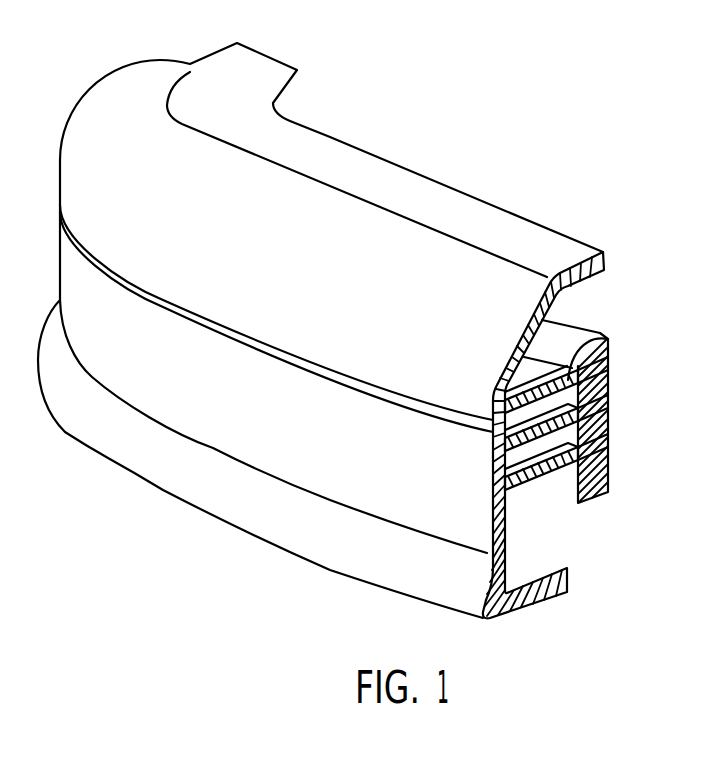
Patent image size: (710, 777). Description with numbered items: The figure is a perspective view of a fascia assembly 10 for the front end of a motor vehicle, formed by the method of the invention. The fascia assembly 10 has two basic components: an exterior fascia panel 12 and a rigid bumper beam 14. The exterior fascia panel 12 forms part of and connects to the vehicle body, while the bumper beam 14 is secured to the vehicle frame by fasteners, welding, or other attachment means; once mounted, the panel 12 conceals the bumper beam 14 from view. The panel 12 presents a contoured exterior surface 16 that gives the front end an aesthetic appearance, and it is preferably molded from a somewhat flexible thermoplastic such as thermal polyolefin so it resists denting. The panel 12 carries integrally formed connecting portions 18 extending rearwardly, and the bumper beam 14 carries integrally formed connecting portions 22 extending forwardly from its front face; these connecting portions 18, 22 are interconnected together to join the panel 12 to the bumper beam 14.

The fascia assembly 10 is at (503, 95).
The exterior fascia panel 12 is at (340, 452).
The bumper beam 14 is at (603, 413).
The contoured exterior surface 16 is at (200, 278).
The connecting portions 18 is at (515, 413).
The connecting portions 22 is at (567, 377).